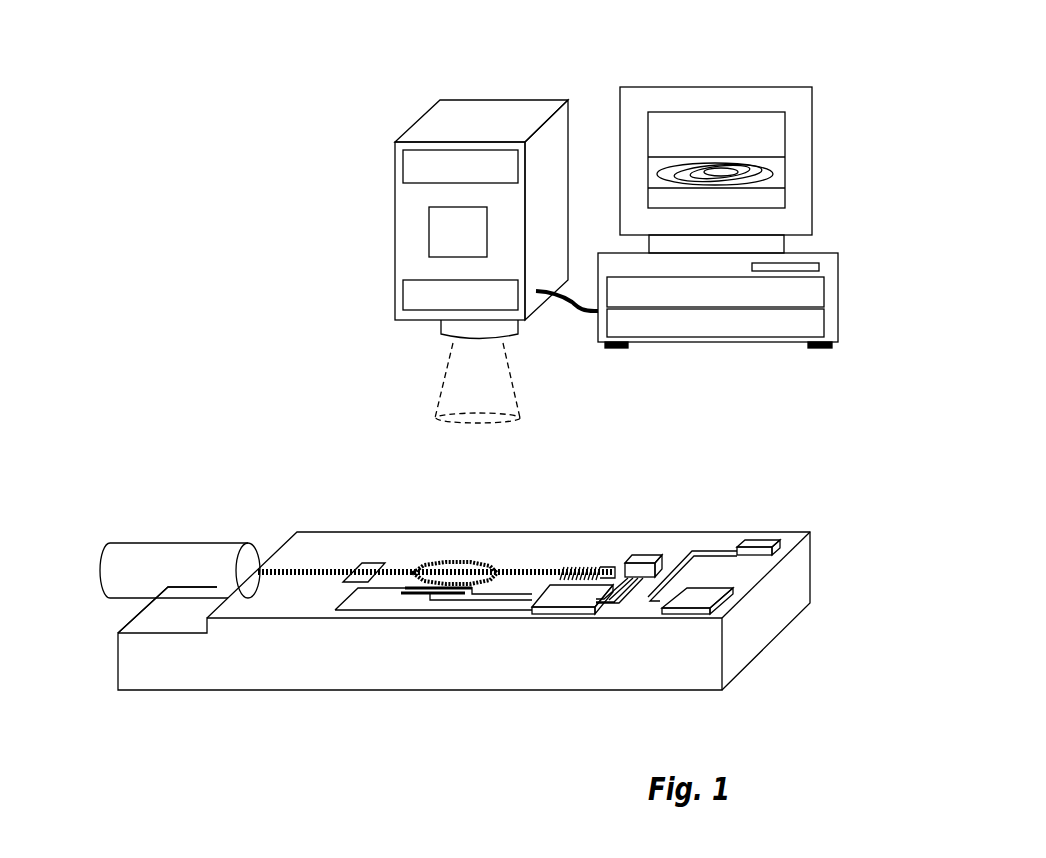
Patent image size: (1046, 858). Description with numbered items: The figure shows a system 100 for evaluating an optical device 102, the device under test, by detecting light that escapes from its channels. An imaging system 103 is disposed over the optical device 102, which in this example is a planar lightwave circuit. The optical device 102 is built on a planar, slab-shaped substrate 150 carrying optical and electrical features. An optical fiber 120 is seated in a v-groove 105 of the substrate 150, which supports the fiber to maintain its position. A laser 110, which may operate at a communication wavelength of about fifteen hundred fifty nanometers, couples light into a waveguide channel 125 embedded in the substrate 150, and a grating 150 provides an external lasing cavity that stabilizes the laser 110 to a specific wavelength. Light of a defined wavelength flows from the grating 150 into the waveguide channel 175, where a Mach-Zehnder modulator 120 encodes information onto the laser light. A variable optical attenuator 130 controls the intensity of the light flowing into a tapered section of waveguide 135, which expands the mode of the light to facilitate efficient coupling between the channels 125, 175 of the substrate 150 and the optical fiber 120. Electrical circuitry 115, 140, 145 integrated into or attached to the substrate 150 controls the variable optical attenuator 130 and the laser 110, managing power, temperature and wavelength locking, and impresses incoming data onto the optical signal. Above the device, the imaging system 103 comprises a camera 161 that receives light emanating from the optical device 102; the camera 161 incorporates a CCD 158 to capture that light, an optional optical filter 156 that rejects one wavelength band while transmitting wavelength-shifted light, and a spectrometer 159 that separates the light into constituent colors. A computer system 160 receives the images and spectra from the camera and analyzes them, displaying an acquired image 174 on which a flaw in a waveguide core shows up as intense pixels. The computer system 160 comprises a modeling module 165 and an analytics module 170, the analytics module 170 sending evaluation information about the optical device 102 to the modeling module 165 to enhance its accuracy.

The system 100 is at (178, 33).
The optical device 102 is at (327, 447).
The imaging system 103 is at (345, 133).
The v-groove 105 is at (146, 600).
The laser 110 is at (651, 552).
The electrical circuitry 115 is at (558, 614).
The optical fiber 120 is at (174, 578).
The waveguide channel 125 is at (612, 568).
The variable optical attenuator 130 is at (363, 563).
The tapered section of waveguide 135 is at (272, 568).
The electrical circuitry 140 is at (709, 552).
The electrical circuitry 145 is at (758, 553).
The substrate 150 is at (685, 670).
The optical filter 156 is at (505, 306).
The CCD 158 is at (505, 178).
The spectrometer 159 is at (477, 243).
The computer system 160 is at (660, 342).
The camera 161 is at (395, 238).
The modeling module 165 is at (818, 333).
The analytics module 170 is at (818, 301).
The acquired image 174 is at (685, 155).
The waveguide channel 175 is at (517, 566).